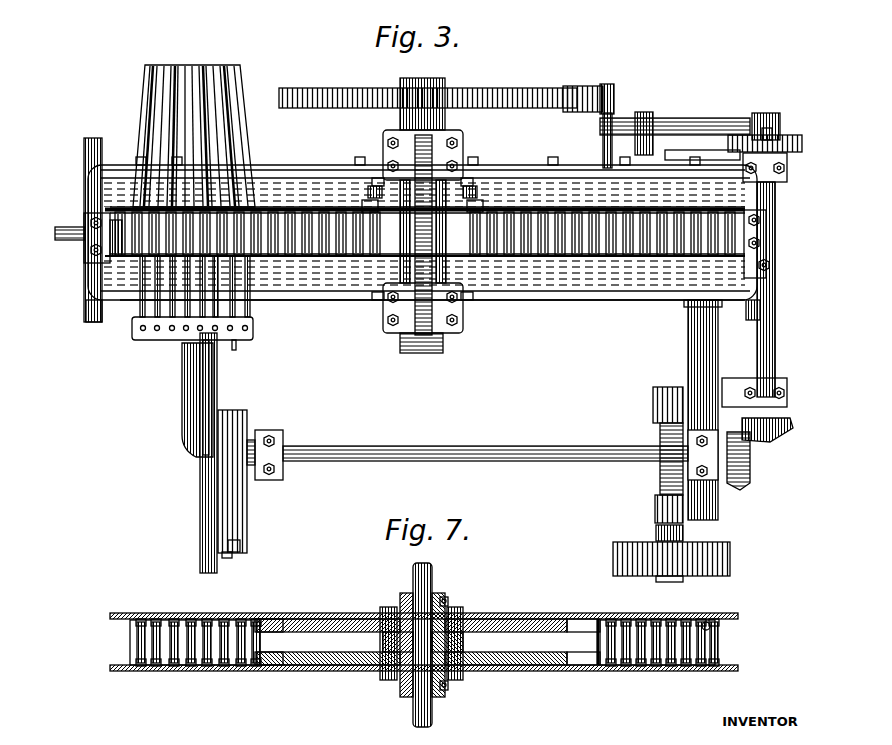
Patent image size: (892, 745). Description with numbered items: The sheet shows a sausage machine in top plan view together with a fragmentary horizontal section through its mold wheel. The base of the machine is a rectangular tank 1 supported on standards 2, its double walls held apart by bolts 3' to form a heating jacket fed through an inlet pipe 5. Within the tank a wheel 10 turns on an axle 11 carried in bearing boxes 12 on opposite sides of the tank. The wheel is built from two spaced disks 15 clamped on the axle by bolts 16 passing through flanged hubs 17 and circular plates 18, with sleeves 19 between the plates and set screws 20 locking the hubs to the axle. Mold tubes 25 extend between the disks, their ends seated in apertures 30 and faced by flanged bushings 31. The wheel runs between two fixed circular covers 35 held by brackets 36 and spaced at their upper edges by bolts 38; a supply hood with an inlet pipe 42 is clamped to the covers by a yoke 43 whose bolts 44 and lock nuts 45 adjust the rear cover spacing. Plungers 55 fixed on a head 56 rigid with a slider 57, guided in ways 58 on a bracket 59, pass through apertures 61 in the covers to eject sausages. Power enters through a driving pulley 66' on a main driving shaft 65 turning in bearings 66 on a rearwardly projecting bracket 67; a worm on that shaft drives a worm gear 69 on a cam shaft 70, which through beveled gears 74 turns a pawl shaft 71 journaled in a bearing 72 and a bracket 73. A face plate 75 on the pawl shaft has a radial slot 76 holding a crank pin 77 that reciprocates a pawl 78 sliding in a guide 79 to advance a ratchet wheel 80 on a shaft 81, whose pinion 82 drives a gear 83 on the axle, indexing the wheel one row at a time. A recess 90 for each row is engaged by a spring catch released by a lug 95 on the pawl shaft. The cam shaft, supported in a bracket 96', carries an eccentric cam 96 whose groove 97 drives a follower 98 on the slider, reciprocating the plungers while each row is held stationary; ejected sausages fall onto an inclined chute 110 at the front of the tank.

In FIG. 3, the tank 1 is at (562, 300).
In FIG. 3, the standards 2 is at (85, 313).
In FIG. 3, the bolts 3' is at (310, 229).
In FIG. 3, the inlet pipe 5 is at (68, 240).
In FIG. 7, the inlet pipe 5 is at (138, 655).
In FIG. 3, the wheel 10 is at (640, 215).
In FIG. 3, the axle 11 is at (425, 82).
In FIG. 7, the axle 11 is at (415, 700).
In FIG. 3, the bearing boxes 12 is at (383, 150).
In FIG. 3, the disks 15 is at (770, 205).
In FIG. 7, the disks 15 is at (525, 619).
In FIG. 7, the bolts 16 is at (386, 608).
In FIG. 7, the flanged collars or hubs 17 is at (405, 594).
In FIG. 3, the circular plates 18 is at (500, 214).
In FIG. 7, the circular plates 18 is at (318, 619).
In FIG. 7, the sleeves 19 is at (382, 642).
In FIG. 7, the set screws 20 is at (445, 597).
In FIG. 3, the tubes 25 is at (290, 212).
In FIG. 7, the tubes 25 is at (680, 646).
In FIG. 7, the apertures 30 is at (268, 630).
In FIG. 7, the flanged metal bushing 31 is at (598, 666).
In FIG. 3, the circular covers 35 is at (298, 205).
In FIG. 7, the circular covers 35 is at (262, 613).
In FIG. 3, the brackets 36 is at (96, 216).
In FIG. 3, the bolts 38 is at (365, 205).
In FIG. 3, the inlet pipe 42 is at (420, 355).
In FIG. 3, the yoke or clamp 43 is at (433, 152).
In FIG. 3, the bolts or set screws 44 is at (376, 178).
In FIG. 3, the lock nuts 45 is at (372, 192).
In FIG. 3, the plungers 55 is at (136, 320).
In FIG. 3, the head 56 is at (142, 318).
In FIG. 3, the slider 57 is at (200, 470).
In FIG. 3, the fixed ways 58 is at (198, 412).
In FIG. 3, the bracket 59 is at (188, 348).
In FIG. 7, the apertures 61 is at (172, 619).
In FIG. 3, the main driving shaft 65 is at (684, 532).
In FIG. 3, the bearings 66 is at (643, 455).
In FIG. 3, the driving pulley 66' is at (703, 562).
In FIG. 3, the bracket 67 is at (688, 378).
In FIG. 3, the worm gear 69 is at (660, 440).
In FIG. 3, the cam shaft 70 is at (518, 446).
In FIG. 3, the pawl shaft 71 is at (776, 340).
In FIG. 3, the bearing 72 is at (780, 379).
In FIG. 3, the bracket 73 is at (788, 168).
In FIG. 3, the beveled gears 74 is at (793, 428).
In FIG. 3, the face plate 75 is at (790, 136).
In FIG. 3, the undercut radial slot 76 is at (768, 130).
In FIG. 3, the crank pin 77 is at (765, 113).
In FIG. 3, the pawl 78 is at (718, 118).
In FIG. 3, the guide 79 is at (645, 115).
In FIG. 3, the ratchet wheel 80 is at (612, 118).
In FIG. 3, the shaft 81 is at (586, 86).
In FIG. 3, the pinion 82 is at (610, 84).
In FIG. 3, the gear 83 is at (512, 100).
In FIG. 3, the recess 90 is at (698, 300).
In FIG. 3, the lug or cam 95 is at (770, 264).
In FIG. 3, the eccentric disk or cam 96 is at (251, 481).
In FIG. 3, the bracket 96' is at (290, 449).
In FIG. 3, the eccentric groove 97 is at (241, 548).
In FIG. 3, the follower 98 is at (230, 558).
In FIG. 3, the inclined chute 110 is at (185, 78).